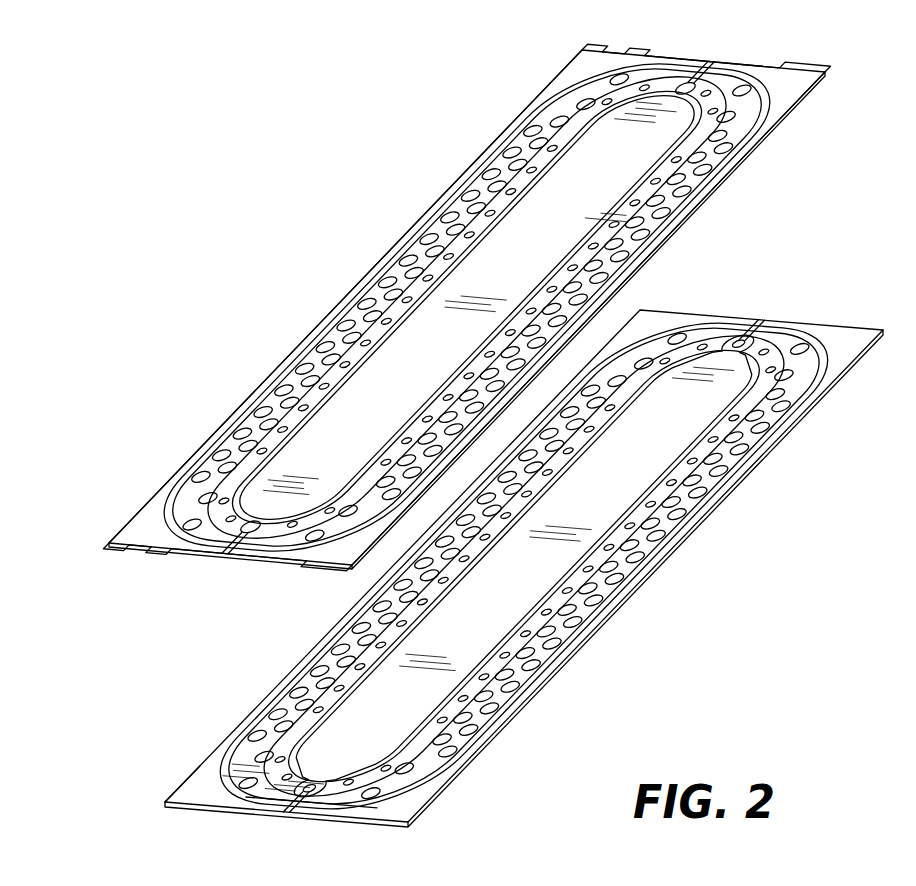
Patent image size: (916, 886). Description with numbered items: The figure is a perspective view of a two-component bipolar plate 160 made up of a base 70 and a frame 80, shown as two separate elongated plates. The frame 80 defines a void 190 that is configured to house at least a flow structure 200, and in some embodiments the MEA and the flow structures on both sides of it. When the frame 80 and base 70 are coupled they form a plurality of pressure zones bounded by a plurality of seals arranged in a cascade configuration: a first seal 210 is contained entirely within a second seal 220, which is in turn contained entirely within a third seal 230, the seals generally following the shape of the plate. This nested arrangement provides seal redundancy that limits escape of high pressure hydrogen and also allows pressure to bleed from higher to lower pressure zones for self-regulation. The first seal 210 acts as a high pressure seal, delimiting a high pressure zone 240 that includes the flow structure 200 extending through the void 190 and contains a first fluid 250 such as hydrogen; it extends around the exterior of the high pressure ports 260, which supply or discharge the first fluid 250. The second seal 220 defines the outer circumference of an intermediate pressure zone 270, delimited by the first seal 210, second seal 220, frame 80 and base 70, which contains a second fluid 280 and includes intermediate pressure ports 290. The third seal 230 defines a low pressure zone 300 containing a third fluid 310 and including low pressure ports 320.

The base 70 is at (750, 240).
The frame 80 is at (716, 50).
The bipolar plate 160 is at (222, 178).
The void 190 is at (577, 148).
The flow structure 200 is at (720, 400).
The first seal 210 is at (757, 430).
The second seal 220 is at (525, 566).
The third seal 230 is at (272, 702).
The high pressure zone 240 is at (708, 458).
The first fluid 250 is at (690, 500).
The high pressure ports 260 is at (737, 338).
The intermediate pressure zone 270 is at (432, 778).
The second fluid 280 is at (533, 672).
The intermediate pressure ports 290 is at (340, 356).
The low pressure zone 300 is at (205, 766).
The third fluid 310 is at (237, 760).
The low pressure ports 320 is at (296, 378).